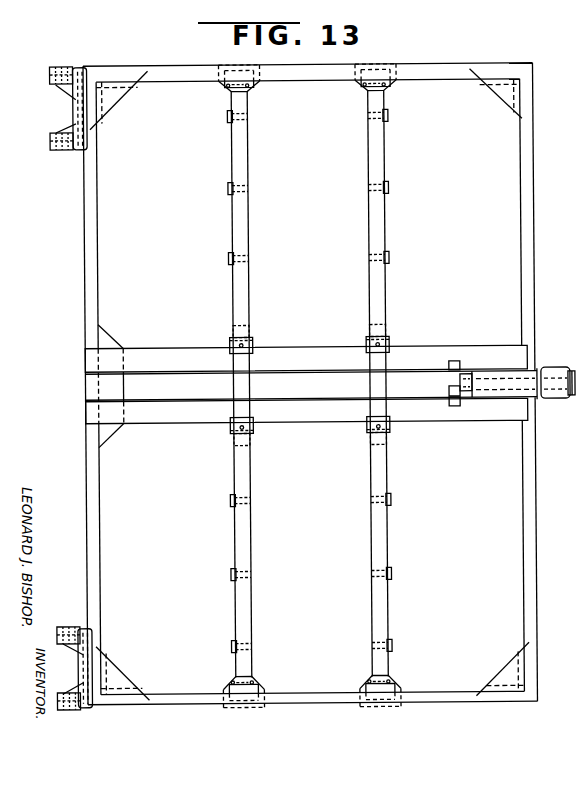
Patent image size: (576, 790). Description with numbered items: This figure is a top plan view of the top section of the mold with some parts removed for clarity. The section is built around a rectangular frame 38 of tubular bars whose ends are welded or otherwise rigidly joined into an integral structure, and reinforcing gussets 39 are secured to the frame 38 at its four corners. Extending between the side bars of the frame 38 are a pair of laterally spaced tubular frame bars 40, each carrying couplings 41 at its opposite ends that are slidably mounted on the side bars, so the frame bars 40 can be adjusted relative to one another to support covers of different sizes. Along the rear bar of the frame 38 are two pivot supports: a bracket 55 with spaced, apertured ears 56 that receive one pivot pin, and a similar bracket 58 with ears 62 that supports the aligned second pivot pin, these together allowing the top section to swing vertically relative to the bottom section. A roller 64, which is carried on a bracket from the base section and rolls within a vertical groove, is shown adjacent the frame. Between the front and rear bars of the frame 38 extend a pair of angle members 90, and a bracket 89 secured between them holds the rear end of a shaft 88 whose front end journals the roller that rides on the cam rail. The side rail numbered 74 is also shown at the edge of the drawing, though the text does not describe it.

The rectangular frame 38 is at (110, 571).
The reinforcing gussets 39 is at (118, 92).
The tubular frame bars 40 is at (253, 634).
The couplings 41 is at (258, 85).
The bracket 55 is at (65, 622).
The ears 56 is at (57, 700).
The bracket 58 is at (63, 152).
The ears 62 is at (52, 70).
The roller 64 is at (547, 381).
The slide rail 74 is at (330, 341).
The shaft 88 is at (557, 370).
The bracket 89 is at (487, 377).
The angle members 90 is at (446, 352).